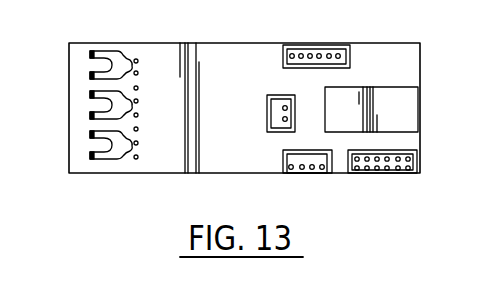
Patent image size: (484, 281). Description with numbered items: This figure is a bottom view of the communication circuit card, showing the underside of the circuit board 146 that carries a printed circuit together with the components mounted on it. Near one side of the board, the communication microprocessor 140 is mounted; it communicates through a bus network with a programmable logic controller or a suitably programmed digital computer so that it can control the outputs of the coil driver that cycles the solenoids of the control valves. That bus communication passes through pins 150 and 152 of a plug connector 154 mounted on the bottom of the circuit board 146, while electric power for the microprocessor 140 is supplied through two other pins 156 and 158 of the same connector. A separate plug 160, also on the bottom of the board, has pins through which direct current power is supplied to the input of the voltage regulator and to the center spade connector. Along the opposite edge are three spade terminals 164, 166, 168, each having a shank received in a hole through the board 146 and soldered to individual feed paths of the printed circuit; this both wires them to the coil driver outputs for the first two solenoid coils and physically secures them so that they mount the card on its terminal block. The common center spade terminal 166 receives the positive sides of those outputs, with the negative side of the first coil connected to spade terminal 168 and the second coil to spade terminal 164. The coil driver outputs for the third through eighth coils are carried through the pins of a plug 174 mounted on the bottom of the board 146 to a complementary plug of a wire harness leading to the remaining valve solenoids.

The communication microprocessor 140 is at (390, 93).
The circuit board 146 is at (257, 52).
The pin 150 is at (294, 187).
The pin 152 is at (302, 175).
The plug connector 154 is at (283, 157).
The pin 156 is at (313, 175).
The pin 158 is at (323, 175).
The plug 160 is at (267, 105).
The spade terminal 164 is at (117, 158).
The spade terminal 166 is at (93, 95).
The spade terminal 168 is at (122, 60).
The plug 174 is at (322, 44).